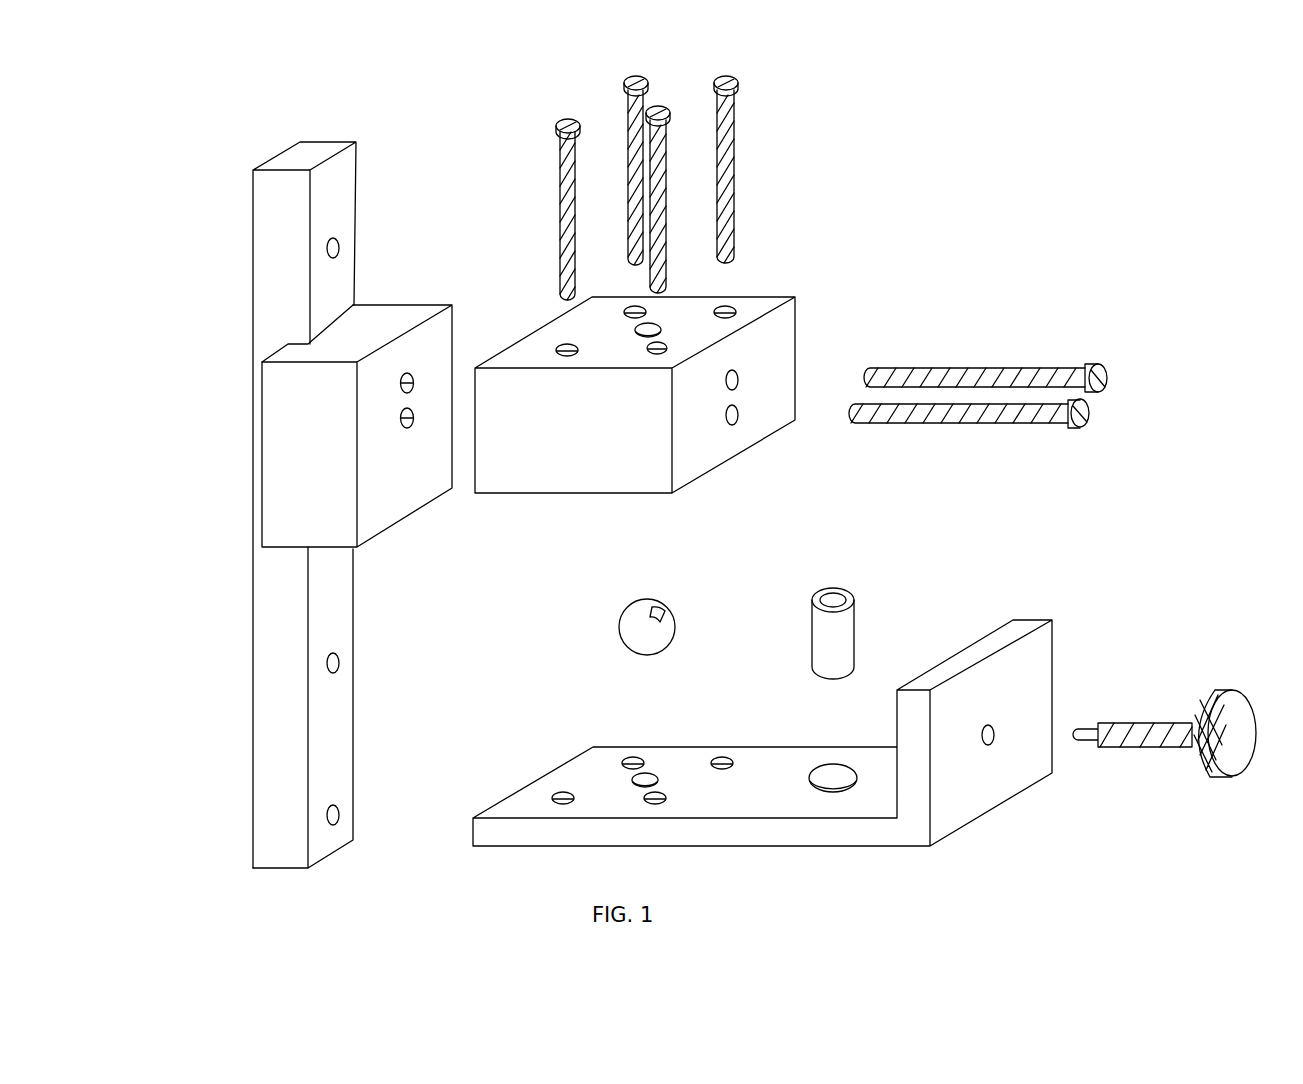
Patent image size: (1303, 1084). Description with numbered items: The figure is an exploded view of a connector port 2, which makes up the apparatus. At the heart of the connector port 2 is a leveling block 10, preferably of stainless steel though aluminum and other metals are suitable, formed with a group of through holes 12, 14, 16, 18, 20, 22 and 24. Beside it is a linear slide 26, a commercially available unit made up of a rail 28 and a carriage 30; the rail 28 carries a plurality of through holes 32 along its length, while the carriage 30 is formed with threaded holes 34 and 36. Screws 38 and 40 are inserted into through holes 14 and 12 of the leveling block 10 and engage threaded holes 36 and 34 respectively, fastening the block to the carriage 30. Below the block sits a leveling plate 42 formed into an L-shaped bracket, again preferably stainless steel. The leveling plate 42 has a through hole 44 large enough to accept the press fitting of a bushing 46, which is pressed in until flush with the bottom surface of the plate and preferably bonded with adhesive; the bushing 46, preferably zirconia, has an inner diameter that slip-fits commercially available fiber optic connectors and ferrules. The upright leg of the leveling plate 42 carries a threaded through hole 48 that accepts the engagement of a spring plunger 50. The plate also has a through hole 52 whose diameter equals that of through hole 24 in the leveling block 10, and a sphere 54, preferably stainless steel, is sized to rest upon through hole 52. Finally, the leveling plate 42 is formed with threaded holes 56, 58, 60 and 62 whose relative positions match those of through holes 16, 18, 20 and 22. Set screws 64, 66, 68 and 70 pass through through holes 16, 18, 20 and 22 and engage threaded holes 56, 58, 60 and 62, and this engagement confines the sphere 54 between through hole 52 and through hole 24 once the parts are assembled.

The connector port 2 is at (1020, 175).
The leveling block 10 is at (670, 385).
The through hole 12 is at (732, 428).
The through hole 14 is at (742, 390).
The through hole 16 is at (737, 310).
The through hole 18 is at (650, 357).
The through hole 20 is at (558, 358).
The through hole 22 is at (622, 322).
The through hole 24 is at (638, 338).
The linear slide 26 is at (286, 505).
The rail 28 is at (270, 630).
The carriage 30 is at (318, 403).
The through holes 32 is at (345, 653).
The threaded hole 34 is at (407, 428).
The threaded hole 36 is at (410, 376).
The screw 38 is at (1113, 360).
The screw 40 is at (1097, 408).
The leveling plate 42 is at (805, 741).
The through hole 44 is at (835, 778).
The bushing 46 is at (852, 585).
The threaded through hole 48 is at (990, 750).
The spring plunger 50 is at (1155, 755).
The through hole 52 is at (658, 770).
The sphere 54 is at (670, 603).
The threaded hole 56 is at (730, 755).
The threaded hole 58 is at (660, 807).
The threaded hole 60 is at (555, 807).
The threaded hole 62 is at (623, 755).
The set screw 64 is at (748, 85).
The set screw 66 is at (672, 150).
The set screw 68 is at (555, 185).
The set screw 70 is at (623, 115).